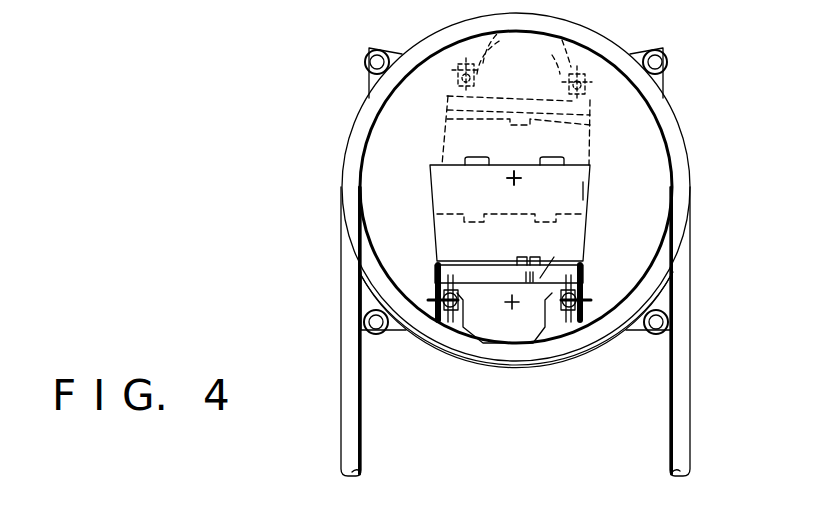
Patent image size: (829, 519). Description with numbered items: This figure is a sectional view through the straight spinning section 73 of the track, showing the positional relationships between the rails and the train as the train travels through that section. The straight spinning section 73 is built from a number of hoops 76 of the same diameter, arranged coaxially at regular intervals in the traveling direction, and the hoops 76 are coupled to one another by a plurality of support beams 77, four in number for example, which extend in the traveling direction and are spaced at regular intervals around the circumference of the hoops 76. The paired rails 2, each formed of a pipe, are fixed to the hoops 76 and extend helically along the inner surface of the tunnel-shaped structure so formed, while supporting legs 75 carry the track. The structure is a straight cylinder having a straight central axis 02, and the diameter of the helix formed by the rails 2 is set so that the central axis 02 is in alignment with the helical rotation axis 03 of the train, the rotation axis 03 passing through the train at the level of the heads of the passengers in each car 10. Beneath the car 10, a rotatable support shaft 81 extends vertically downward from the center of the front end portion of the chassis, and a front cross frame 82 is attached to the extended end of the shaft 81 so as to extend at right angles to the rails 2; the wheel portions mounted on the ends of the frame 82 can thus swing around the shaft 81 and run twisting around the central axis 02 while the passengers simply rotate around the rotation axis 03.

The straight spinning section 73 is at (336, 134).
The supporting leg 75 is at (362, 416).
The hoop 76 is at (691, 152).
The support beam 77 is at (368, 56).
The car 10 is at (428, 177).
The central axis 02 is at (517, 180).
The helical rotation axis 03 is at (585, 192).
The rotatable support shaft 81 is at (522, 267).
The front cross frame 82 is at (554, 257).
The rail 2 is at (449, 314).